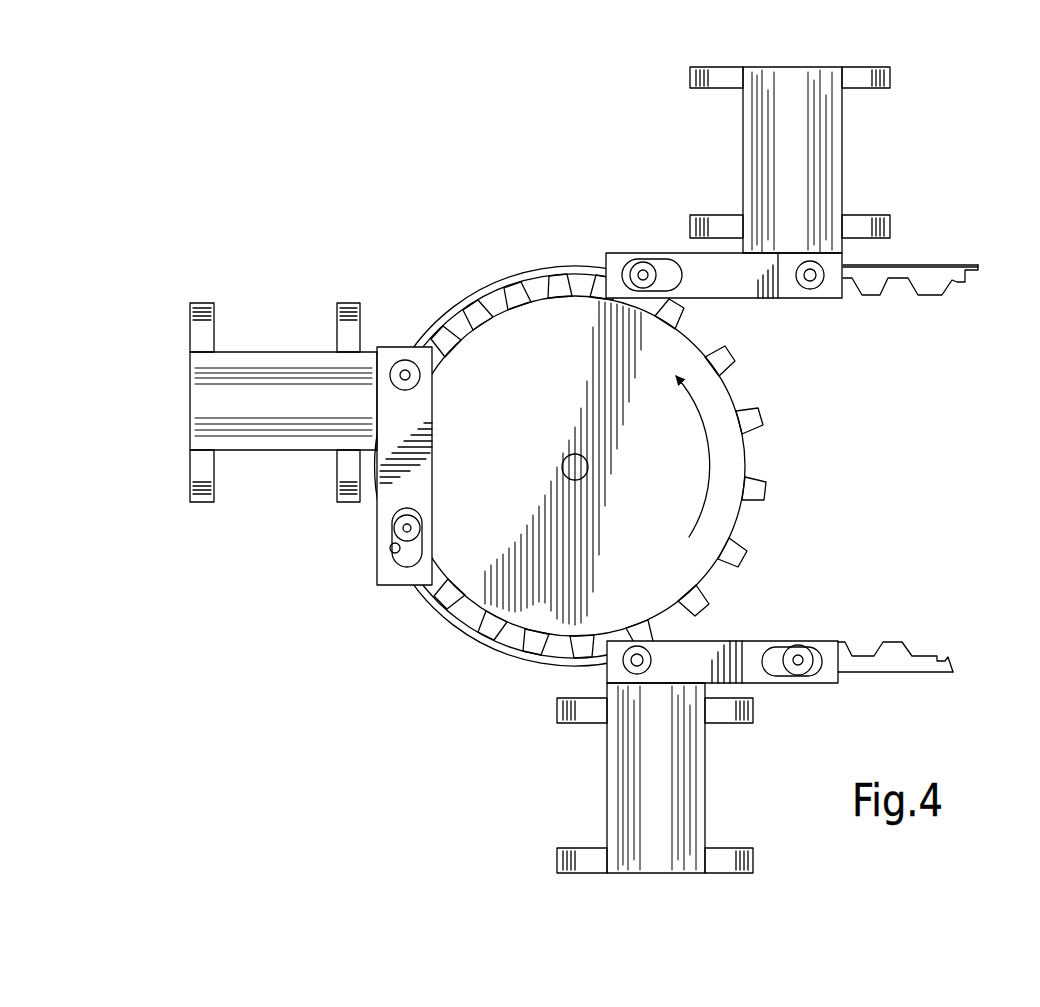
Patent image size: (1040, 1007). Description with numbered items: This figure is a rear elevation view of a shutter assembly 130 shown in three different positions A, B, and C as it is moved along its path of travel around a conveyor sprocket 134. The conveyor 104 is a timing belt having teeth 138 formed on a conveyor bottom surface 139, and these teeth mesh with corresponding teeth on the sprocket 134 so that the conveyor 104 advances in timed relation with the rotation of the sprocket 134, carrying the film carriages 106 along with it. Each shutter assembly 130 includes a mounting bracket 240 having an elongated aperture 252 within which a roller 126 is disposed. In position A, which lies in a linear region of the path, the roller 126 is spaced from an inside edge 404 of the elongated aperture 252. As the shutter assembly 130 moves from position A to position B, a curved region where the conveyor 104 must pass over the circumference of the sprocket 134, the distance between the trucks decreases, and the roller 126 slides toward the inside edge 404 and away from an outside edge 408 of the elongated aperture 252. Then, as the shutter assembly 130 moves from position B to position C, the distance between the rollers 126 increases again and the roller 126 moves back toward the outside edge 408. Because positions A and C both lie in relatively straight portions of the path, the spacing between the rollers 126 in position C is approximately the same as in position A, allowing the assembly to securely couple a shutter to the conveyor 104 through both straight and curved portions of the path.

The conveyor 104 is at (929, 463).
The film carriage 106 is at (535, 477).
The roller 126 is at (812, 300).
The shutter assembly 130 is at (535, 477).
The conveyor sprocket 134 is at (556, 417).
The conveyor teeth 138 is at (930, 297).
The conveyor bottom surface 139 is at (898, 280).
The mounting bracket 240 is at (575, 449).
The elongated aperture 252 is at (655, 262).
The inside edge 404 is at (722, 302).
The outside edge 408 is at (612, 258).
The position A is at (890, 62).
The position B is at (268, 317).
The position C is at (603, 775).